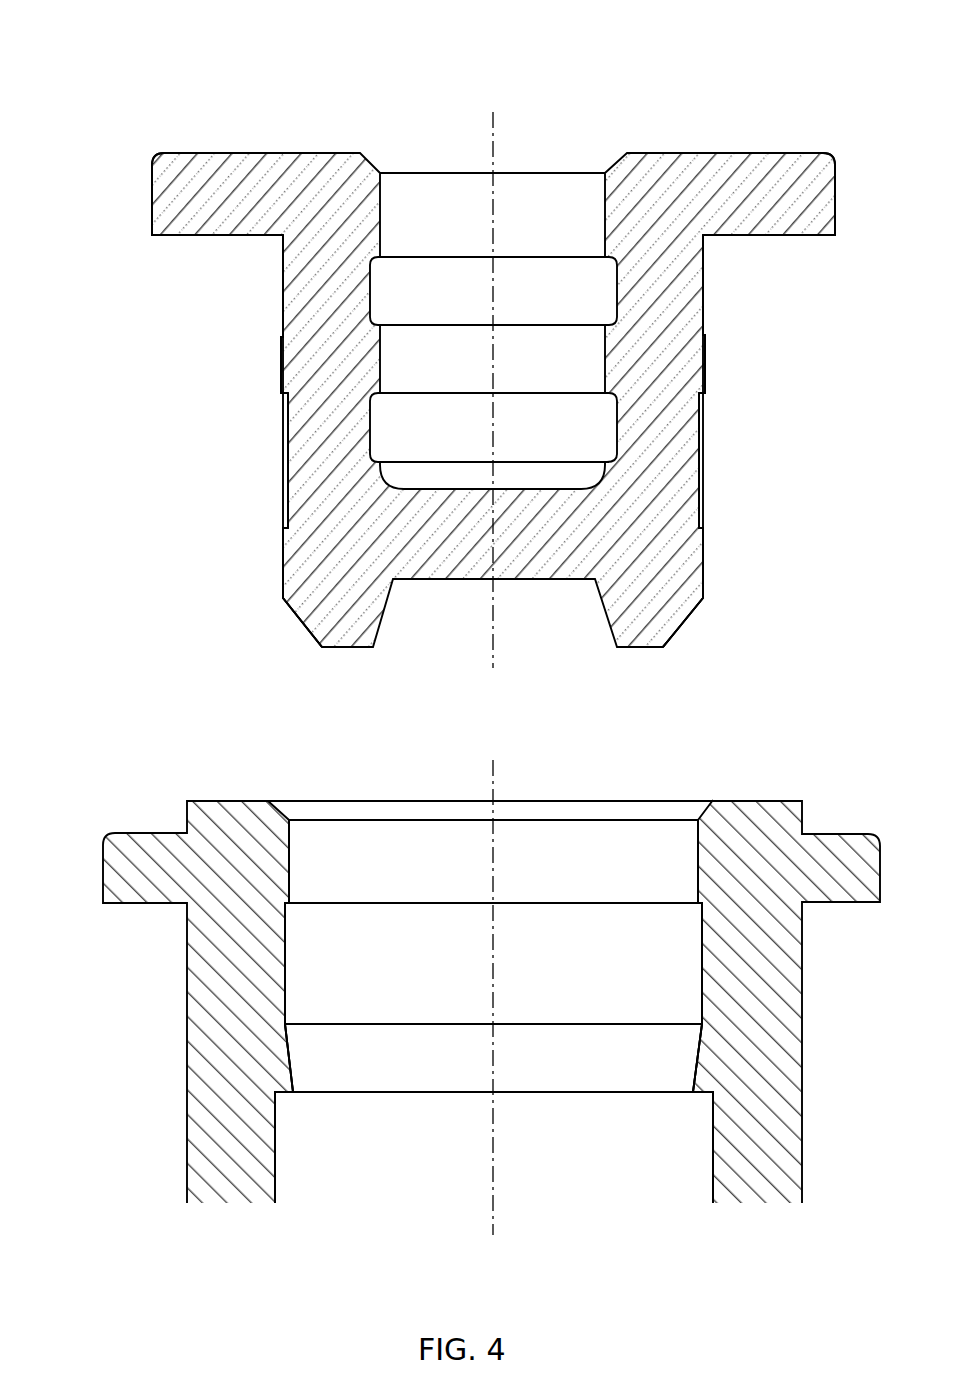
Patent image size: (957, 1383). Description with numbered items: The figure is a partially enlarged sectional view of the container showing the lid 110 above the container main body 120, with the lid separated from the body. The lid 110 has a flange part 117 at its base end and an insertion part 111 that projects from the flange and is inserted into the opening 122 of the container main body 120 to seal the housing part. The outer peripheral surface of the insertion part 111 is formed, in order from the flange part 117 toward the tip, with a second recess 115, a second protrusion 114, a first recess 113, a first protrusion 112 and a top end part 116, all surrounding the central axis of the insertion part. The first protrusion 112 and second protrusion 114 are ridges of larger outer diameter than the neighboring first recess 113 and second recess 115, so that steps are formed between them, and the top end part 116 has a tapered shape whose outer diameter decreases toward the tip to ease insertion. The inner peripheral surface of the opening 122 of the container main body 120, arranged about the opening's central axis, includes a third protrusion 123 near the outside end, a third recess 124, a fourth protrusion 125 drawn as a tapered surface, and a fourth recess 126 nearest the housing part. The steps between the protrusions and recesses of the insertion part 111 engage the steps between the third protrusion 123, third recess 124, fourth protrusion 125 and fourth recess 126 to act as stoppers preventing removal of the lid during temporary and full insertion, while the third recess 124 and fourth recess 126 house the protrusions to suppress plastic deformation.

The lid 110 is at (753, 77).
The insertion part 111 is at (121, 258).
The first protrusion 112 is at (283, 567).
The first recess 113 is at (288, 461).
The second protrusion 114 is at (283, 367).
The second recess 115 is at (283, 291).
The top end part 116 is at (318, 627).
The flange part 117 is at (170, 198).
The container main body 120 is at (753, 767).
The opening 122 is at (552, 943).
The third protrusion 123 is at (289, 866).
The third recess 124 is at (285, 963).
The fourth protrusion 125 is at (293, 1059).
The fourth recess 126 is at (275, 1140).